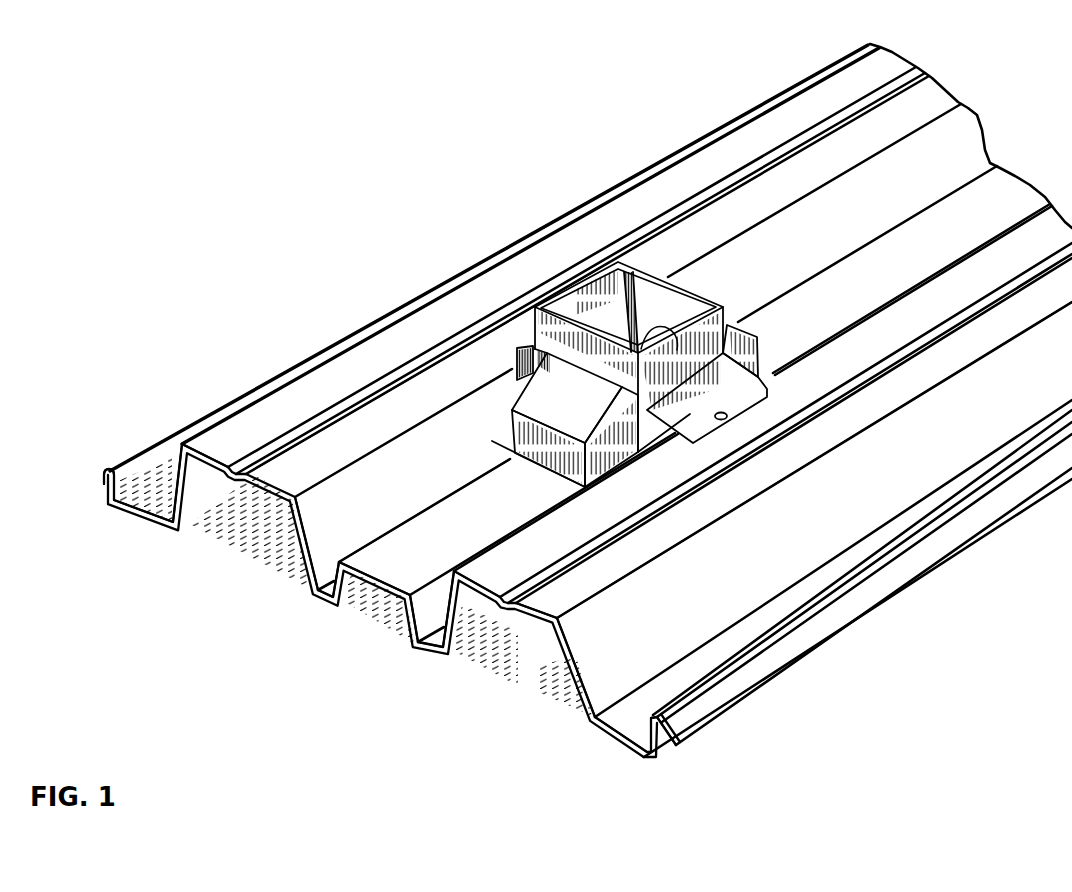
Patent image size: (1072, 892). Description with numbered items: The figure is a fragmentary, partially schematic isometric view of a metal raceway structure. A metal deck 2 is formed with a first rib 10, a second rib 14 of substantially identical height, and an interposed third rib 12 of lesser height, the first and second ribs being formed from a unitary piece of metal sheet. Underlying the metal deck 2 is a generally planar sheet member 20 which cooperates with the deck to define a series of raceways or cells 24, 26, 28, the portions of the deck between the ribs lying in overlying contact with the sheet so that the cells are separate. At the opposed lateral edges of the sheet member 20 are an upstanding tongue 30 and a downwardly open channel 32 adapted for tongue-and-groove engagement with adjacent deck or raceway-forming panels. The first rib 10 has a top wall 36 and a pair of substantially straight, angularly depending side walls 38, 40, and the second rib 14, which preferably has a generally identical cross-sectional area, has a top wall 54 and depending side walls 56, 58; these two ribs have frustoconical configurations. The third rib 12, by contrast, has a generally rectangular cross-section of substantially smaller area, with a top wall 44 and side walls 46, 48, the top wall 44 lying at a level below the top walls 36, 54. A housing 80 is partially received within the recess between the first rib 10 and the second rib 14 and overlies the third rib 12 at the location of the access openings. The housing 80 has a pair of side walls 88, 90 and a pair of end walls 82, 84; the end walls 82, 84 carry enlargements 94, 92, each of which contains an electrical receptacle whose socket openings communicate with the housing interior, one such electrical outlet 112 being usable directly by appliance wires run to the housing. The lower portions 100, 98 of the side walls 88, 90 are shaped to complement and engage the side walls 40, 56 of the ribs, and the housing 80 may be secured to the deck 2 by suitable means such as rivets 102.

The metal deck 2 is at (313, 364).
The first rib 10 is at (384, 340).
The third rib 12 is at (385, 553).
The second rib 14 is at (546, 596).
The sheet member 20 is at (558, 718).
The cell 24 is at (227, 533).
The cell 26 is at (400, 628).
The cell 28 is at (477, 656).
The upstanding tongue 30 is at (673, 738).
The downwardly open channel 32 is at (104, 478).
The top wall 36 is at (362, 390).
The side wall 38 is at (190, 490).
The side wall 40 is at (318, 588).
The top wall 44 is at (490, 527).
The side wall 46 is at (402, 624).
The side wall 48 is at (432, 628).
The top wall 54 is at (649, 564).
The side wall 56 is at (485, 621).
The side wall 58 is at (608, 697).
The housing 80 is at (641, 363).
The end wall 82 is at (656, 284).
The end wall 84 is at (547, 337).
The side wall 88 is at (570, 307).
The side wall 90 is at (730, 323).
The enlargement 92 is at (557, 460).
The enlargement 94 is at (750, 353).
The lower portion of side wall 98 is at (657, 437).
The lower portion of side wall 100 is at (530, 368).
The rivet 102 is at (727, 418).
The electrical outlet 112 is at (657, 317).